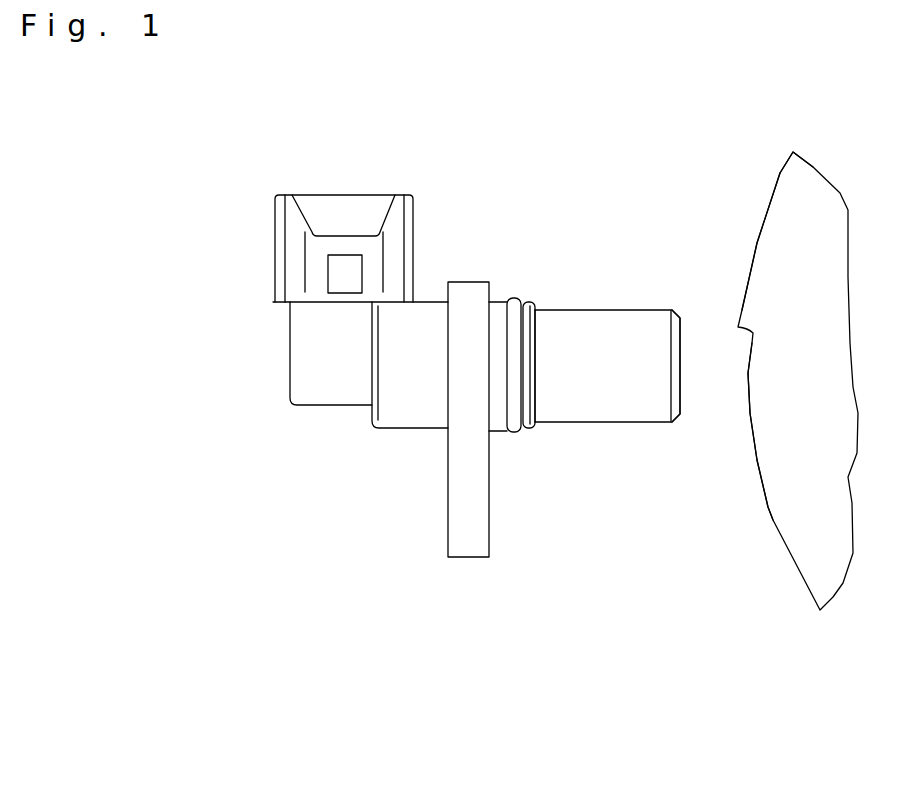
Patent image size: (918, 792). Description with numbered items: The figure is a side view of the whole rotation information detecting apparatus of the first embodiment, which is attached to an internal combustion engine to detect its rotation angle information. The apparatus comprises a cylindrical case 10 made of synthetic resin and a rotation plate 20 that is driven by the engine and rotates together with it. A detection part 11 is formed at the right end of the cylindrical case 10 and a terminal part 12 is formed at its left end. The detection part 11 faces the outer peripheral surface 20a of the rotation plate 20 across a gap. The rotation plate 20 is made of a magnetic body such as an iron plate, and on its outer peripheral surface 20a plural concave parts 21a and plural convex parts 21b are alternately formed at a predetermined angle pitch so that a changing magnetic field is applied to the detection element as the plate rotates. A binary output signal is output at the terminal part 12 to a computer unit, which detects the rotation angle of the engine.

The cylindrical case 10 is at (576, 310).
The detection part 11 is at (683, 345).
The terminal part 12 is at (370, 185).
The rotation plate 20 is at (848, 210).
The outer peripheral surface 20a is at (780, 173).
The concave parts 21a is at (773, 520).
The convex parts 21b is at (755, 245).